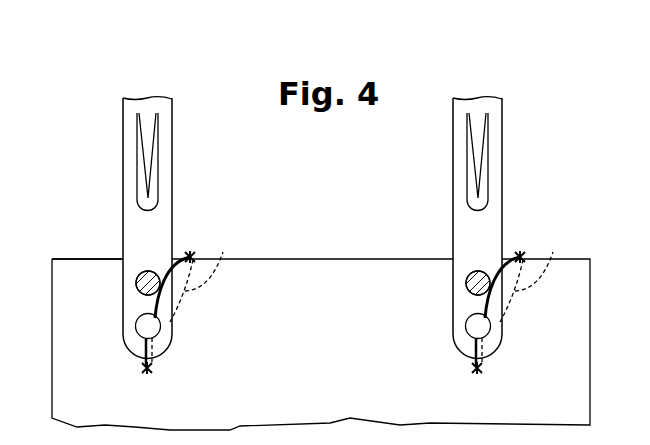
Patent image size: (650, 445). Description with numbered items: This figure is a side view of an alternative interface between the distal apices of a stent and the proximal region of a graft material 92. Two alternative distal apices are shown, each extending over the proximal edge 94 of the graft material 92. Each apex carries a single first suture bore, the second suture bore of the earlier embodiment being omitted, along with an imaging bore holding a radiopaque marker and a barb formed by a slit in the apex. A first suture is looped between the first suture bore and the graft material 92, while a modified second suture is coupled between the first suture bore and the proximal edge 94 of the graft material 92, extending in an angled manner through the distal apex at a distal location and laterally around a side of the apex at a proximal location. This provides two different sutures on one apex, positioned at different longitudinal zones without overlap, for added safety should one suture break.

The graft material 92 is at (70, 311).
The proximal edge 94 is at (55, 273).